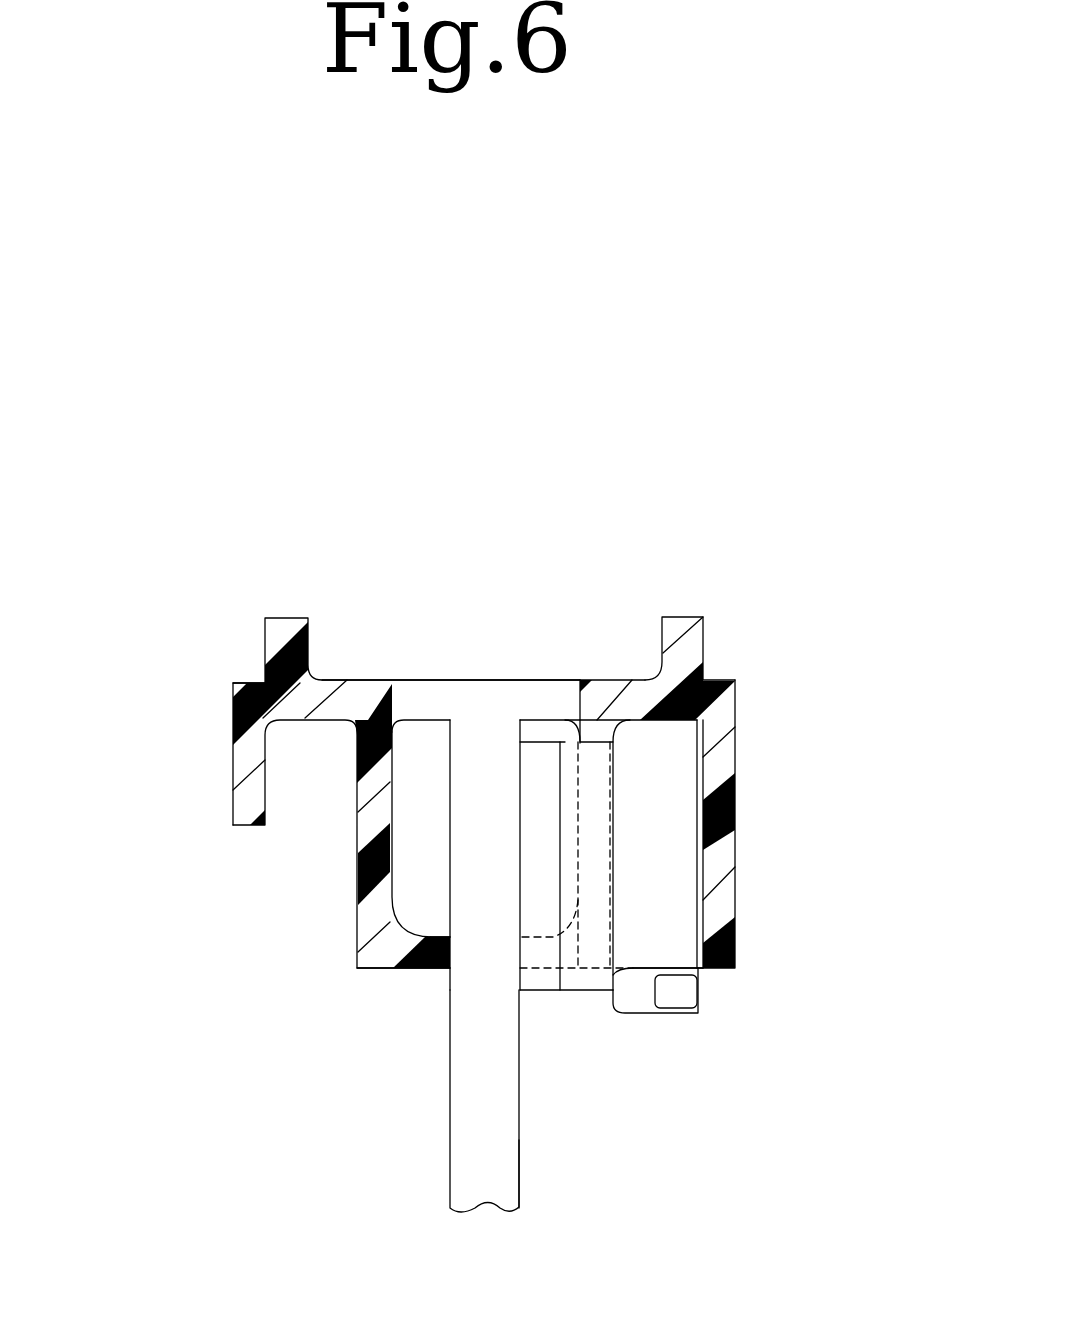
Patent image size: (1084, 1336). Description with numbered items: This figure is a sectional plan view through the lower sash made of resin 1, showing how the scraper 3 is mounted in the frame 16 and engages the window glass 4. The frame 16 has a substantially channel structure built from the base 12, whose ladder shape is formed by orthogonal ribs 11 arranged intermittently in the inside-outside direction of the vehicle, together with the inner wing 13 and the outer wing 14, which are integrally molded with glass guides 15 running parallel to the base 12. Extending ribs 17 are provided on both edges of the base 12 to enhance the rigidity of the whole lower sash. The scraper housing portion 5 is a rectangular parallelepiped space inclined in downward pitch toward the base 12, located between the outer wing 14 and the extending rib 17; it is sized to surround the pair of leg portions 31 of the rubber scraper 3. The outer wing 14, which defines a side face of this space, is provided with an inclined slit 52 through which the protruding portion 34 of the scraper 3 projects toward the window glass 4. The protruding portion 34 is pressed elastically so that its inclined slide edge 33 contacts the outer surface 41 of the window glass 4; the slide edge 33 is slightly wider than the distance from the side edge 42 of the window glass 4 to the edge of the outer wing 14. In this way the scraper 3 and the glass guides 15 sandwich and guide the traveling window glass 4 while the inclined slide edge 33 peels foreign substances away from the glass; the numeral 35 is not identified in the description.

The lower sash made of resin 1 is at (332, 973).
The scraper 3 is at (652, 908).
The window glass 4 is at (468, 1172).
The scraper housing portion 5 is at (735, 866).
The orthogonal rib 11 is at (553, 688).
The base 12 is at (442, 693).
The inner wing 13 is at (593, 960).
The outer wing 14 is at (373, 908).
The glass guide 15 is at (438, 970).
The frame 16 is at (232, 683).
The extending rib 17 is at (245, 763).
The leg portion 31 is at (687, 743).
The slide edge 33 is at (520, 843).
The protruding portion 34 is at (570, 800).
The insert fillet 35 is at (600, 722).
The outer surface of the window glass 41 is at (519, 1140).
The side edge of the window glass 42 is at (482, 718).
The slit 52 is at (580, 862).